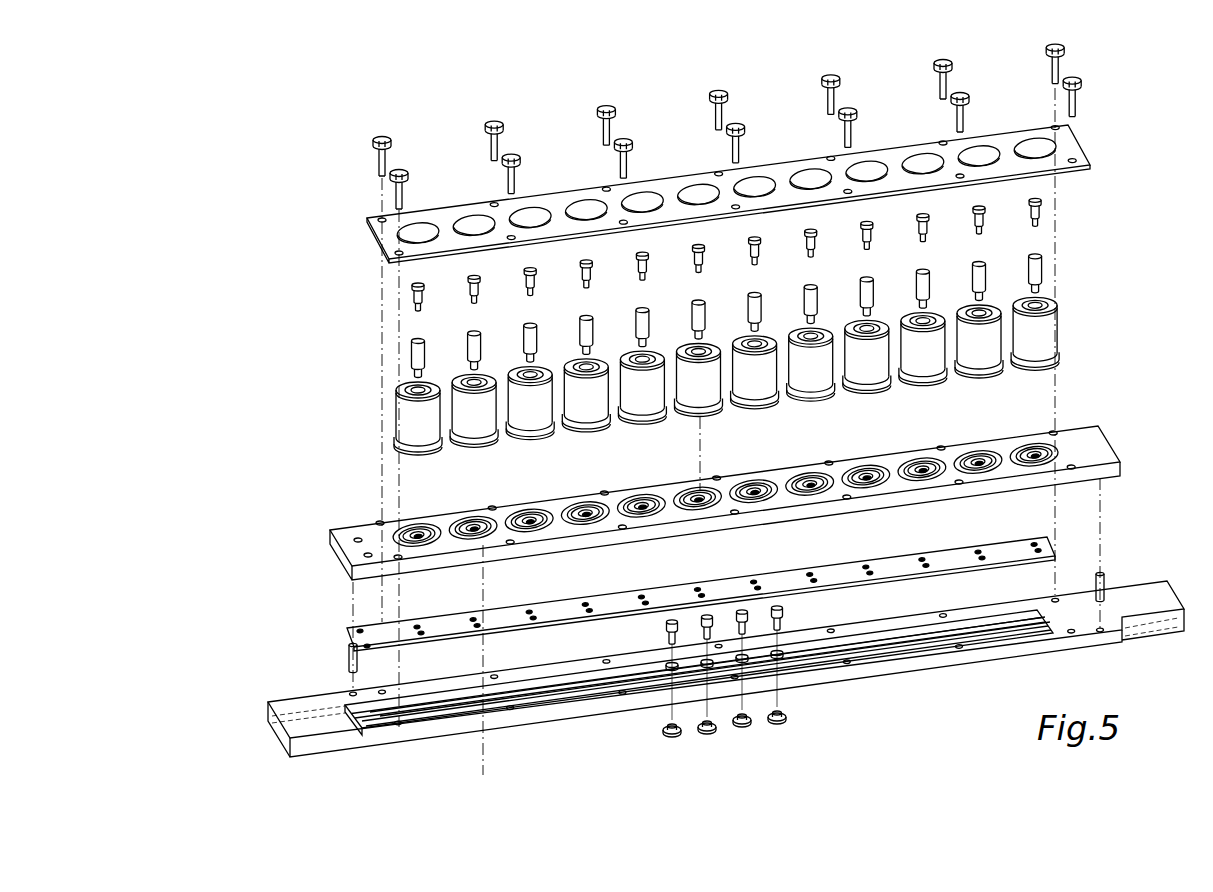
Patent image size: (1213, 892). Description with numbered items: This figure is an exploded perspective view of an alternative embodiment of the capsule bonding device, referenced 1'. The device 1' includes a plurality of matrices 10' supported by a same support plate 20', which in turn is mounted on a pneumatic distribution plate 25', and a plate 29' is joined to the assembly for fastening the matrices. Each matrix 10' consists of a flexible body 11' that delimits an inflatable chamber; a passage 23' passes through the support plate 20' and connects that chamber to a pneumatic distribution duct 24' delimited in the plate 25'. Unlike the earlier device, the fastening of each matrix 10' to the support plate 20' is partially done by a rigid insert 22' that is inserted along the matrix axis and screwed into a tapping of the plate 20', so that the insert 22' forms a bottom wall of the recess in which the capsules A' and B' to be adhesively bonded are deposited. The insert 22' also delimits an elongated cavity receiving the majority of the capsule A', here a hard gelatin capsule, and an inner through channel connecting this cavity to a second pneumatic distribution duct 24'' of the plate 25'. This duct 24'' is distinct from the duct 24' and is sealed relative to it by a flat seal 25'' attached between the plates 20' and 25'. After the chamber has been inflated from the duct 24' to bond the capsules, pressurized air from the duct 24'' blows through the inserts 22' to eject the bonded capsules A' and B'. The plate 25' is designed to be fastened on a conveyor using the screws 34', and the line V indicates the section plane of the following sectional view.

The device 1' is at (784, 126).
The plate 29' is at (676, 194).
The capsule B' is at (663, 250).
The capsule A' is at (355, 304).
The rigid insert 22' is at (643, 318).
The matrix 10' is at (624, 388).
The flexible body 11' is at (1087, 333).
The passage 23' is at (797, 457).
The support plate 20' is at (680, 503).
The flat seal 25'' is at (626, 606).
The pneumatic distribution plate 25' is at (691, 664).
The section line V is at (475, 660).
The pneumatic distribution duct 24' is at (699, 684).
The pneumatic distribution duct 24'' is at (706, 690).
The screws 34' is at (769, 671).